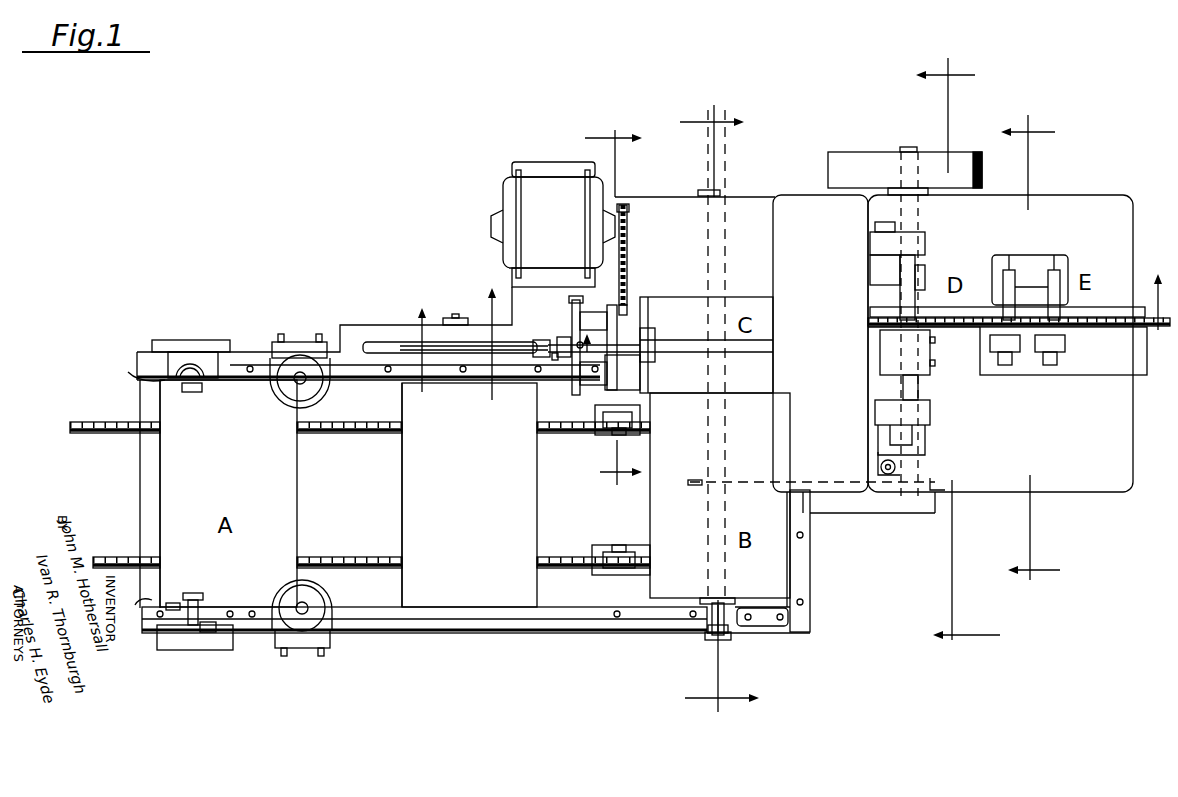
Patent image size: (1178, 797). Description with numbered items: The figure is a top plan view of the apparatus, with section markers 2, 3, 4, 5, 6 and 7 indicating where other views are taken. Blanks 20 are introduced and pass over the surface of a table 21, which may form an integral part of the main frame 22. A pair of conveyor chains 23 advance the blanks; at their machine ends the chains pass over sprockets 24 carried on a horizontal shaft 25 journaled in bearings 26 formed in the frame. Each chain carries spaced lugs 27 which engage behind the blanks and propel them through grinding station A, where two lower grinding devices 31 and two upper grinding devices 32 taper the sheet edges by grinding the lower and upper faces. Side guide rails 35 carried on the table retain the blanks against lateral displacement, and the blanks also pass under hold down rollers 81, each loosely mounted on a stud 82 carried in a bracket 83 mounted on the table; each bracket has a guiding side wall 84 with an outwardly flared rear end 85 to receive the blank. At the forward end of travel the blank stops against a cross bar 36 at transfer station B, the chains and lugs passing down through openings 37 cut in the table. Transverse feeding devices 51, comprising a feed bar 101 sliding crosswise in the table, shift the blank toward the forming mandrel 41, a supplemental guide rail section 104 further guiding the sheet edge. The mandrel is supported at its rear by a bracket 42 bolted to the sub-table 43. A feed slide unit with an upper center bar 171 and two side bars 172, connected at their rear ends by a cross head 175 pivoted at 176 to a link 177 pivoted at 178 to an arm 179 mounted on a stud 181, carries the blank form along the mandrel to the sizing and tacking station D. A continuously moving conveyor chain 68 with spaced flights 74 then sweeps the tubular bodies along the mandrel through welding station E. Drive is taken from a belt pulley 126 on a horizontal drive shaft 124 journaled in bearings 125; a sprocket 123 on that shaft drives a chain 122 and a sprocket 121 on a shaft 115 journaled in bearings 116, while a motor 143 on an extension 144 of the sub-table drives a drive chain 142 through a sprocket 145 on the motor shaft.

The blanks 20 is at (298, 472).
The table 21 is at (372, 634).
The main frame 22 is at (190, 651).
The conveyor chains 23 is at (375, 434).
The sprockets 24 is at (632, 422).
The horizontal shaft 25 is at (620, 435).
The bearings 26 is at (640, 410).
The lugs 27 is at (145, 436).
The lower grinding devices 31 is at (192, 358).
The upper grinding devices 32 is at (300, 360).
The side guide rails 35 is at (345, 381).
The cross bar 36 is at (810, 550).
The openings 37 is at (597, 434).
The forming mandrel 41 is at (628, 310).
The bracket 42 is at (612, 368).
The sub-table 43 is at (680, 197).
The transverse feeding devices 51 is at (728, 600).
The conveyor chain 68 is at (1094, 327).
The flights 74 is at (1110, 307).
The hold down rollers 81 is at (203, 388).
The stud 82 is at (192, 593).
The bracket 83 is at (199, 608).
The guiding side wall 84 is at (174, 606).
The flared rear end 85 is at (136, 607).
The feed bar 101 is at (724, 638).
The supplemental guide rail section 104 is at (766, 626).
The horizontal shaft 115 is at (712, 640).
The bearings 116 is at (722, 192).
The sprocket 121 is at (692, 486).
The chain 122 is at (812, 480).
The sprocket 123 is at (938, 479).
The horizontal drive shaft 124 is at (908, 147).
The bearings 125 is at (928, 193).
The belt pulley 126 is at (840, 165).
The drive chain 142 is at (628, 262).
The motor 143 is at (553, 228).
The extension 144 is at (540, 164).
The sprocket 145 is at (630, 208).
The upper center bar 171 is at (584, 343).
The side bars 172 is at (592, 312).
The cross head 175 is at (569, 300).
The pivotal connection 176 is at (563, 337).
The link 177 is at (556, 361).
The pivotal connection 178 is at (542, 340).
The arm 179 is at (475, 346).
The stud 181 is at (456, 314).
The section line 2- 2 is at (822, 364).
The section line 3- 3 is at (711, 415).
The section line 4- 4 is at (601, 311).
The section line 5- 5 is at (505, 339).
The section line 6- 6 is at (950, 361).
The section line 7- 7 is at (1036, 356).